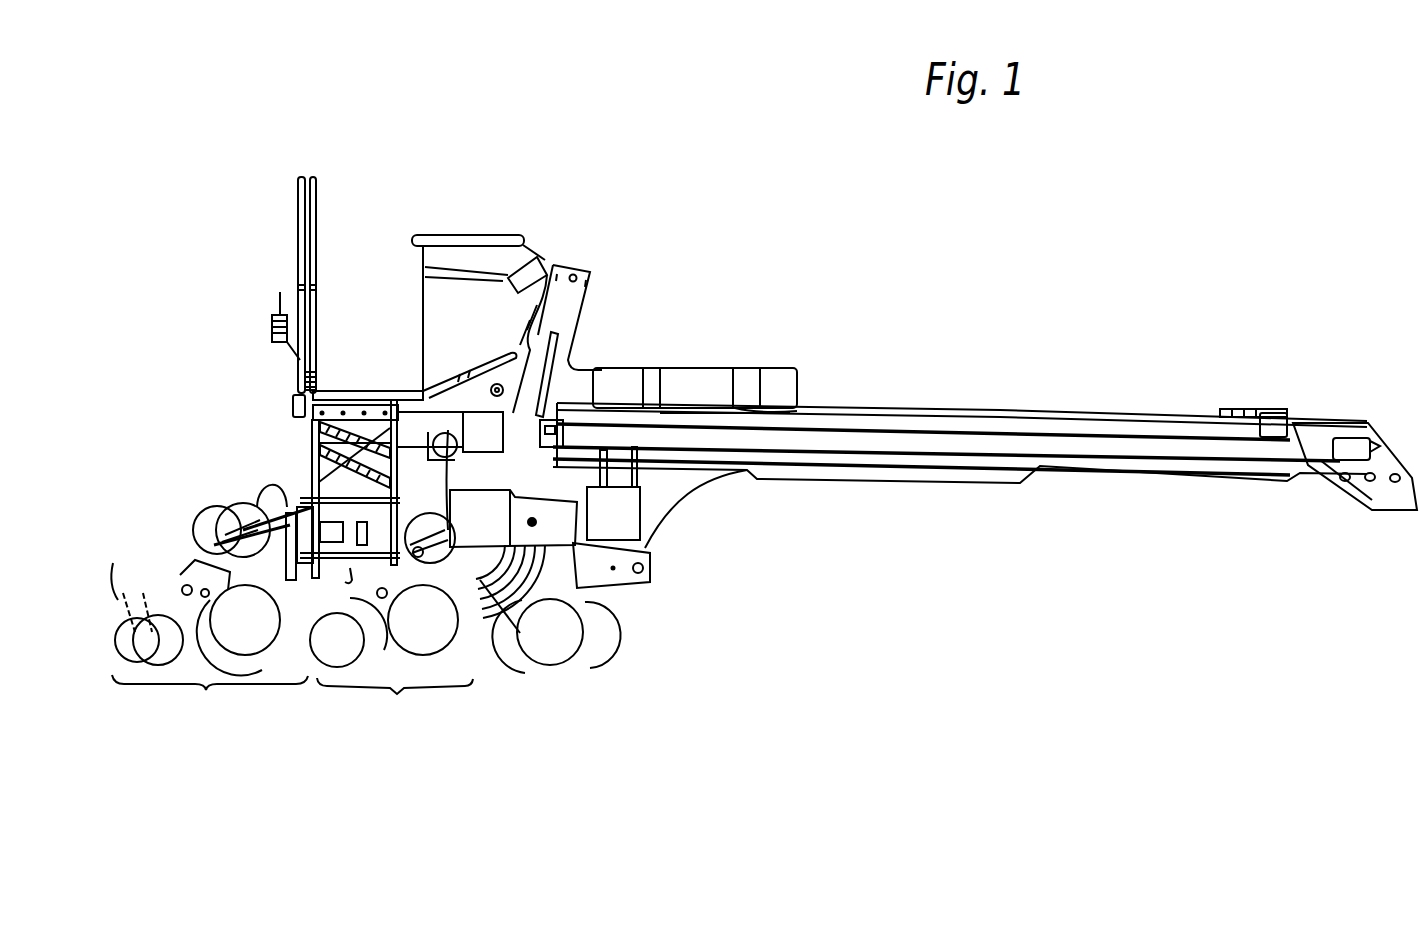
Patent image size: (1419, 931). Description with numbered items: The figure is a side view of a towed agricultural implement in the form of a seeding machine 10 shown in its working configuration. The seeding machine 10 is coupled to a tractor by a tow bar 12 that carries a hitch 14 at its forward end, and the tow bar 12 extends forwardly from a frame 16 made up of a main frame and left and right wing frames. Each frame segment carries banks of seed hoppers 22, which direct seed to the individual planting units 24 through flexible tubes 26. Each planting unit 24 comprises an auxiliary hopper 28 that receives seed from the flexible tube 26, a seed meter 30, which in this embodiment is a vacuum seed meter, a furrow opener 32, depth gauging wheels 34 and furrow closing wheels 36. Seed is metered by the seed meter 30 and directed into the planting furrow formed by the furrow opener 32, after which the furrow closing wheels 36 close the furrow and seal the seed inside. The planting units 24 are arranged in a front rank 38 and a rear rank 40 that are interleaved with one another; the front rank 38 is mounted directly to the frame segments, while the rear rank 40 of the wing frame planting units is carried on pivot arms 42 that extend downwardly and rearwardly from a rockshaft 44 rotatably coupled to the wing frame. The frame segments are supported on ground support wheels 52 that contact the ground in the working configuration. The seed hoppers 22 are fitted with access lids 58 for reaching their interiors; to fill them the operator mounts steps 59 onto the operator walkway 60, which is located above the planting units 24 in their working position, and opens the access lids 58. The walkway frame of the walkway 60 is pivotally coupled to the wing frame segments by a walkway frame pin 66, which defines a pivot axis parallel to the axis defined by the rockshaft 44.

The seeding machine 10 is at (710, 210).
The tow bar 12 is at (893, 478).
The hitch 14 is at (1397, 500).
The frame 16 is at (523, 418).
The seed hoppers 22 is at (573, 218).
The planting units 24 is at (264, 708).
The flexible tubes 26 is at (313, 470).
The auxiliary hopper 28 is at (247, 523).
The seed meter 30 is at (240, 510).
The furrow opener 32 is at (267, 658).
The depth gauging wheels 34 is at (232, 626).
The furrow closing wheels 36 is at (162, 625).
The front rank 38 is at (395, 705).
The rear rank 40 is at (210, 700).
The pivot arms 42 is at (487, 479).
The rockshaft 44 is at (438, 417).
The ground support wheels 52 is at (567, 597).
The access lids 58 is at (470, 234).
The steps 59 is at (332, 576).
The operator walkway 60 is at (352, 366).
The walkway frame pin 66 is at (272, 328).